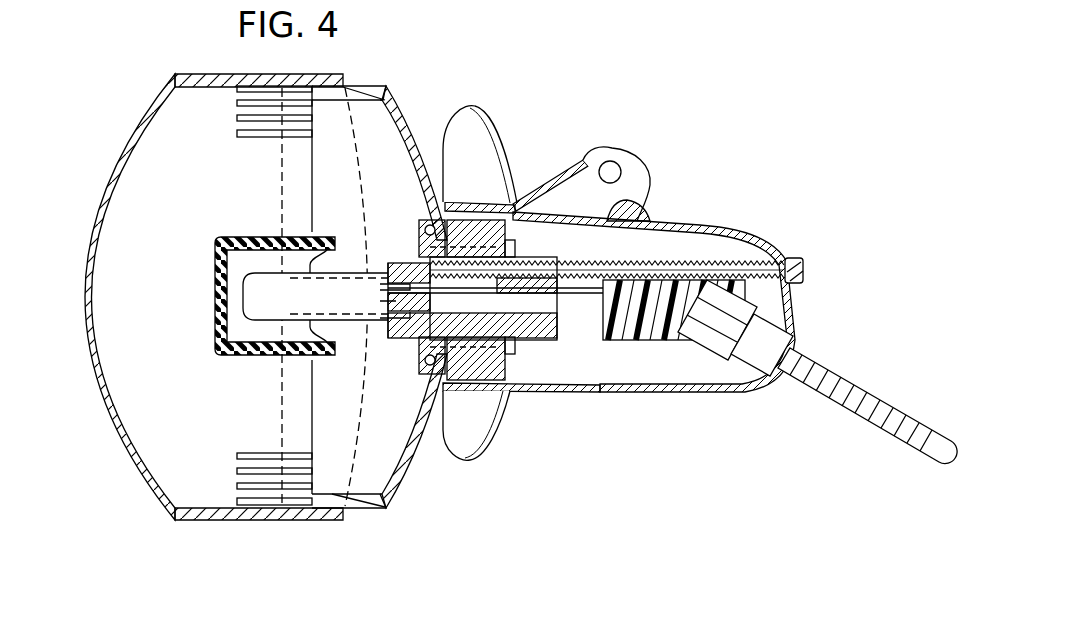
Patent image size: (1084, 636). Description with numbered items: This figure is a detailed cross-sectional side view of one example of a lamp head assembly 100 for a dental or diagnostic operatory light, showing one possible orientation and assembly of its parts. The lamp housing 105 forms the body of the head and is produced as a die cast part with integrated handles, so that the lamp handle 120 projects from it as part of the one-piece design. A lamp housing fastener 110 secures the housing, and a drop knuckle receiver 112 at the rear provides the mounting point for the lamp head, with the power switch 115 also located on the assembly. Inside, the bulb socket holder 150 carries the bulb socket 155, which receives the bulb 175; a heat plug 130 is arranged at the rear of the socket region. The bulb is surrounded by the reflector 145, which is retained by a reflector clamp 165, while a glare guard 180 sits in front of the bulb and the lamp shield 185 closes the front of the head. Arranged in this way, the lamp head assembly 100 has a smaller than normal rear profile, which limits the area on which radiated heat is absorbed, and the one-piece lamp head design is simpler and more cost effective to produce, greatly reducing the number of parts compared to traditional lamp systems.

The lamp head assembly 100 is at (556, 114).
The lamp housing 105 is at (767, 231).
The lamp housing fastener 110 is at (806, 270).
The drop knuckle receiver 112 is at (633, 172).
The power switch 115 is at (843, 374).
The lamp handle 120 is at (497, 433).
The heat plug 130 is at (508, 360).
The reflector 145 is at (403, 474).
The bulb socket holder 150 is at (562, 325).
The bulb socket 155 is at (412, 335).
The reflector clamp 165 is at (426, 228).
The bulb 175 is at (226, 312).
The glare guard 180 is at (216, 285).
The lamp shield 185 is at (113, 168).